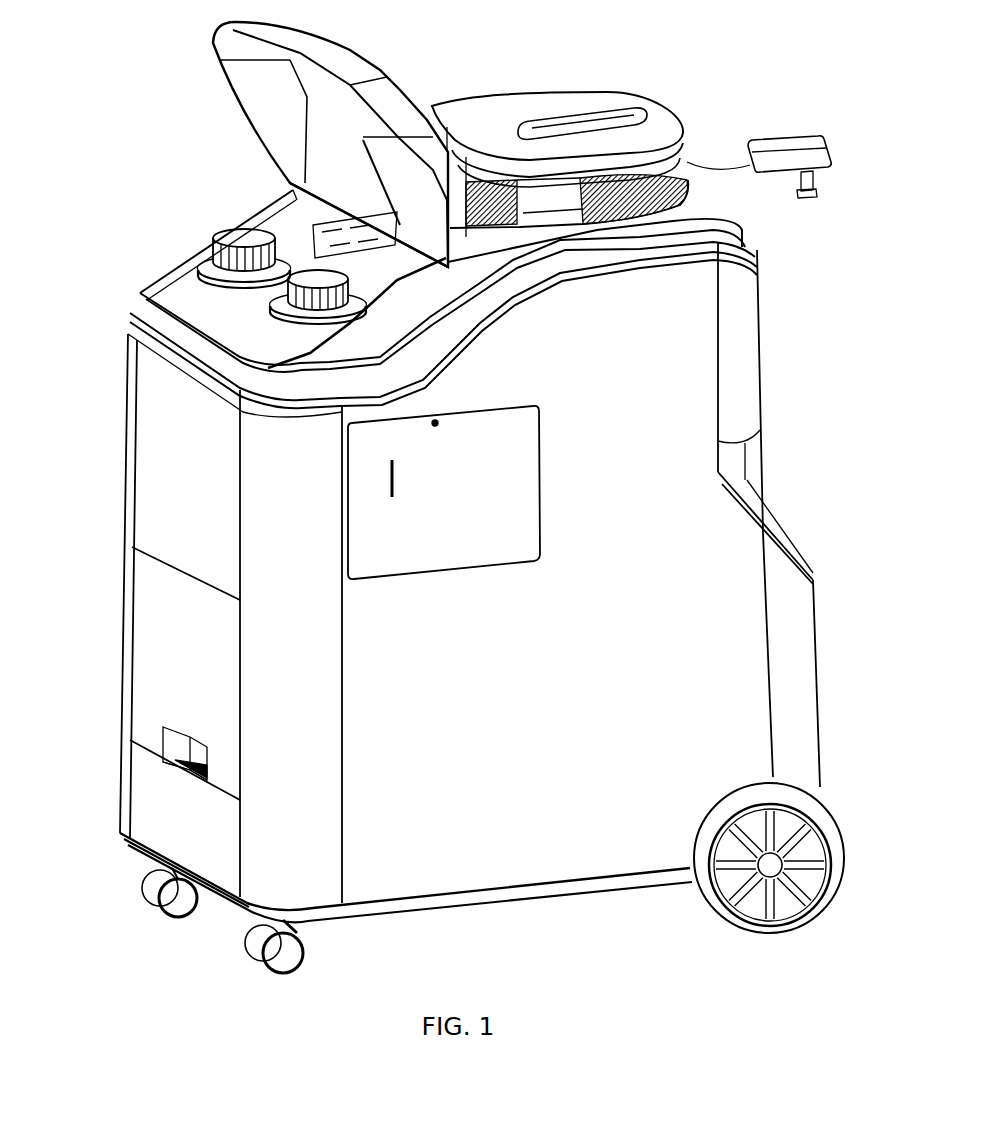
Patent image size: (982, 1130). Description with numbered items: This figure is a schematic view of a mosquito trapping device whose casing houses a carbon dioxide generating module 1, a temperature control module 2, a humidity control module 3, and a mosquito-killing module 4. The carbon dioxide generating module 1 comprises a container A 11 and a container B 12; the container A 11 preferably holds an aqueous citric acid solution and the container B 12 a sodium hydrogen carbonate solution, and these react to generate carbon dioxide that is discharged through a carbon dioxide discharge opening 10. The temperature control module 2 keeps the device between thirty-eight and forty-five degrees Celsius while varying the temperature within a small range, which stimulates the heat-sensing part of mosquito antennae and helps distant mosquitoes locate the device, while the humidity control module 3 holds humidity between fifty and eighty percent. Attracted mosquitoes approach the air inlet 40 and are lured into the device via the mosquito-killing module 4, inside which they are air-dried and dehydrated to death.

The carbon dioxide generating module 1 is at (262, 218).
The temperature control module 2 is at (285, 180).
The humidity control module 3 is at (425, 272).
The mosquito-killing module 4 is at (763, 307).
The carbon dioxide discharge opening 10 is at (647, 113).
The container A 11 is at (177, 262).
The container B 12 is at (137, 313).
The air inlet 40 is at (655, 197).